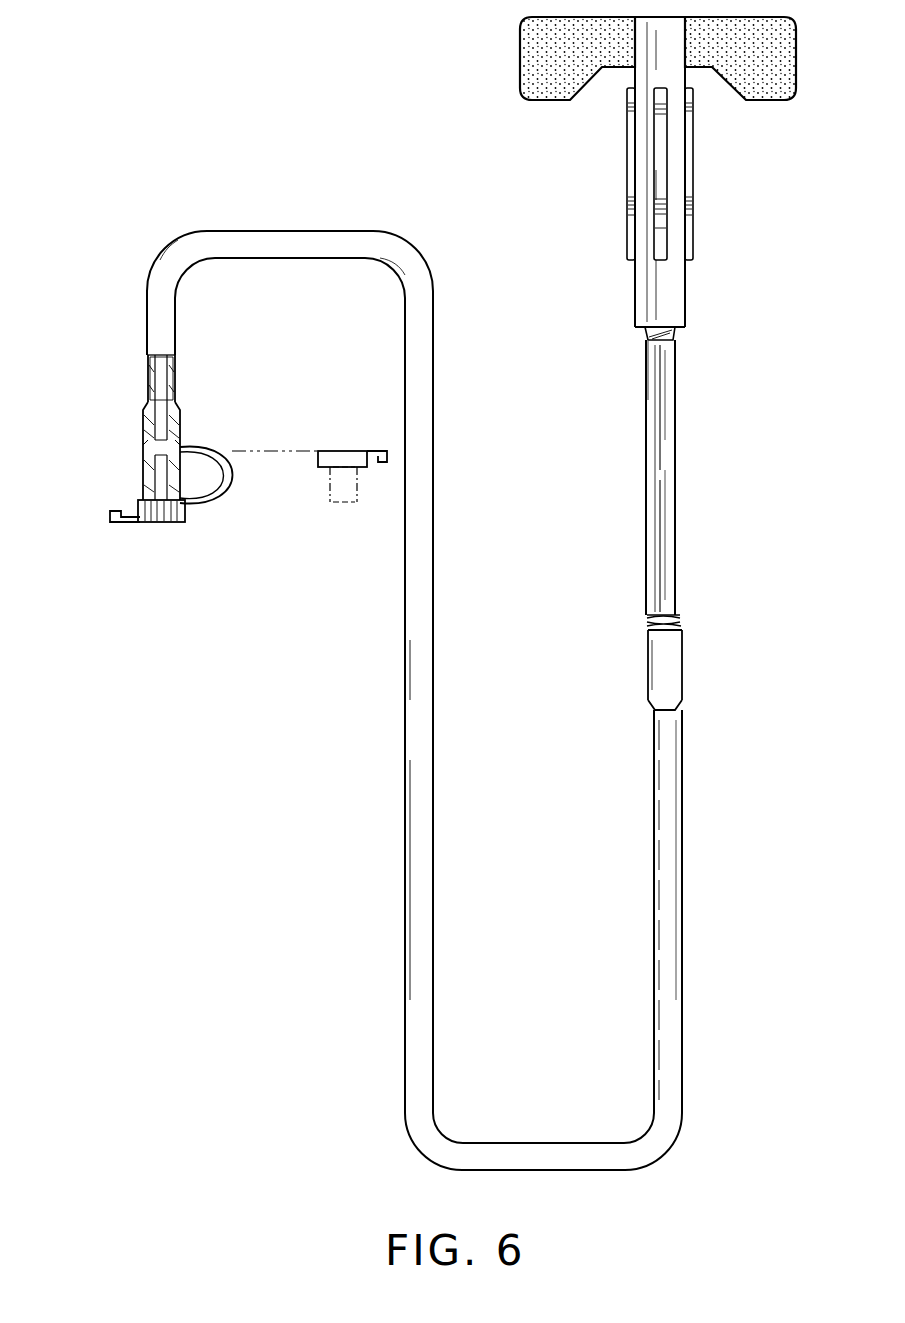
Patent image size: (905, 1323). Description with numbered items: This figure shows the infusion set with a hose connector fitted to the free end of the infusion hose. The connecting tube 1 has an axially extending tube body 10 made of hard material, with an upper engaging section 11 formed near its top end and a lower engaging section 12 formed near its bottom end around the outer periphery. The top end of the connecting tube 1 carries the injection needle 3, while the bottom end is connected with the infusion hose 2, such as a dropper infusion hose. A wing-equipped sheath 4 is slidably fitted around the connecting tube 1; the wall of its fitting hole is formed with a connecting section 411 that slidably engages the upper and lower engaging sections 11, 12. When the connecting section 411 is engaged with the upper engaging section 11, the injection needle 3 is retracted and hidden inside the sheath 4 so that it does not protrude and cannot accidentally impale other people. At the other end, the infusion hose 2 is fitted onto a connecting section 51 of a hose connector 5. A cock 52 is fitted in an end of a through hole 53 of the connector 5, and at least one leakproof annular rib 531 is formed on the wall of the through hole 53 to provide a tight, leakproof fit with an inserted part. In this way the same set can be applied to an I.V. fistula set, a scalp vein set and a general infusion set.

The connecting tube 1 is at (676, 533).
The tube body 10 is at (662, 473).
The upper engaging section 11 is at (665, 347).
The lower engaging section 12 is at (682, 621).
The infusion hose 2 is at (680, 928).
The injection needle 3 is at (672, 161).
The wing-equipped sheath 4 is at (698, 218).
The connecting section 411 is at (686, 330).
The hose connector 5 is at (120, 523).
The connecting section 51 is at (178, 393).
The cock 52 is at (345, 502).
The through hole 53 is at (149, 458).
The leakproof annular rib 531 is at (176, 523).